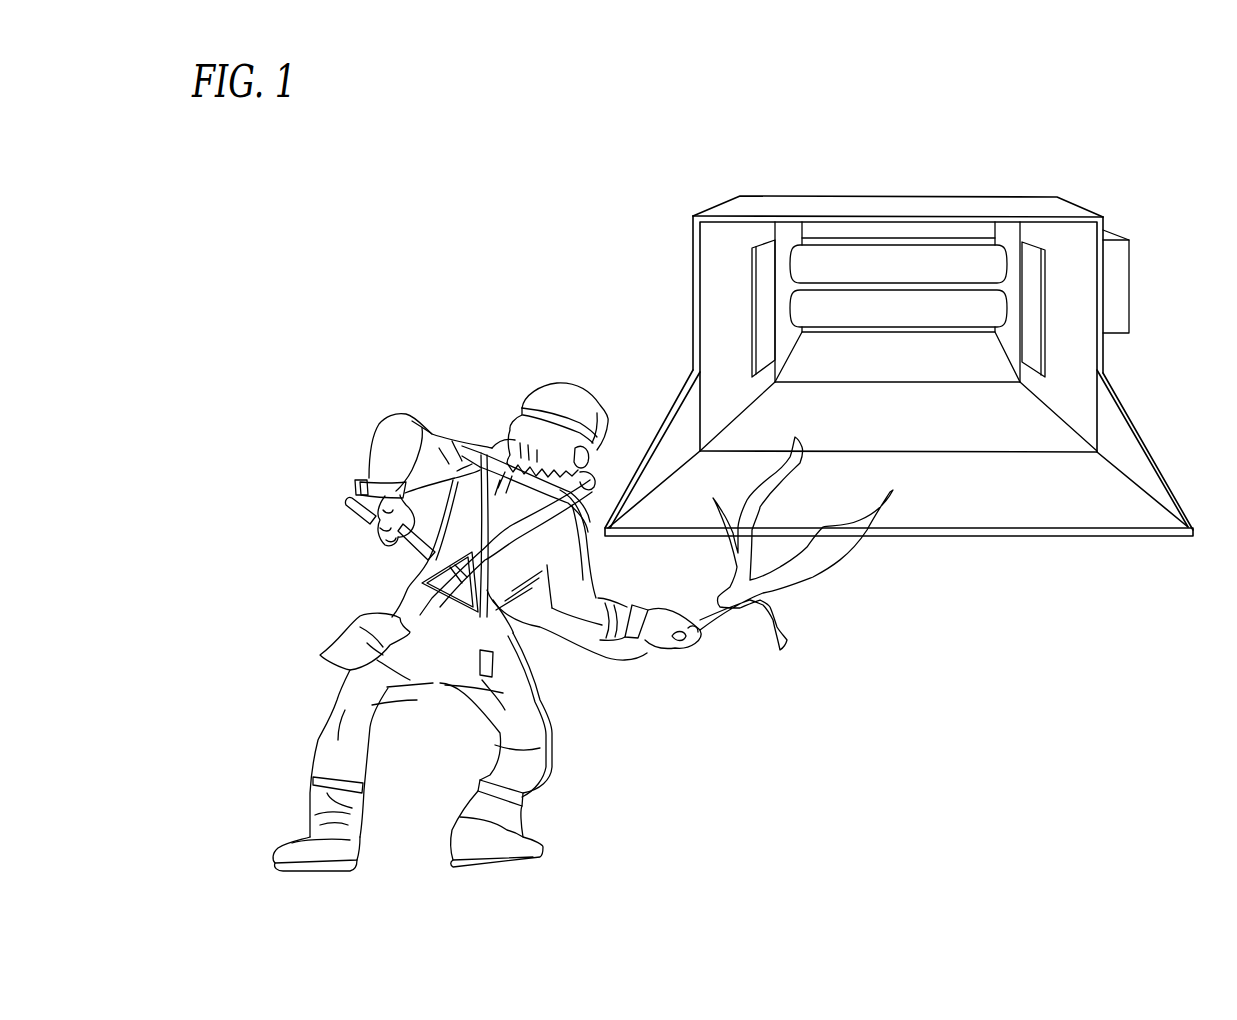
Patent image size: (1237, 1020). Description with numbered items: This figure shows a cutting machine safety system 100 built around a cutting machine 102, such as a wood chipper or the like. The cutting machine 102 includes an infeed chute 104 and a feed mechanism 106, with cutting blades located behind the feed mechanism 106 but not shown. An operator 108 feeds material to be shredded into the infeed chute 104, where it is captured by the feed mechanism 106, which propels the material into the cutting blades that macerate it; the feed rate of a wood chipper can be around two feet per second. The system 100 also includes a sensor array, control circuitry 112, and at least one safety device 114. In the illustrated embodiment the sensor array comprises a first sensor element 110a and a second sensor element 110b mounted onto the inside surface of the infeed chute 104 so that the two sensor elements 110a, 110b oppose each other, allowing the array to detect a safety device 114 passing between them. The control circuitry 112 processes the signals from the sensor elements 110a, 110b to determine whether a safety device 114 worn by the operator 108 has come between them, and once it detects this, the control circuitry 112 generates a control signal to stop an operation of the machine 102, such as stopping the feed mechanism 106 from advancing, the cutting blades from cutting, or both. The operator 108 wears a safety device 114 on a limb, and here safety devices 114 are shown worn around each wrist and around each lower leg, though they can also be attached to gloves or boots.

The cutting machine safety system 100 is at (589, 127).
The cutting machine 102 is at (944, 199).
The infeed chute 104 is at (720, 245).
The feed mechanism 106 is at (886, 262).
The operator 108 is at (553, 393).
The first sensor element 110a is at (760, 275).
The second sensor element 110b is at (1037, 324).
The control circuitry 112 is at (1115, 277).
The safety device 114 is at (367, 477).